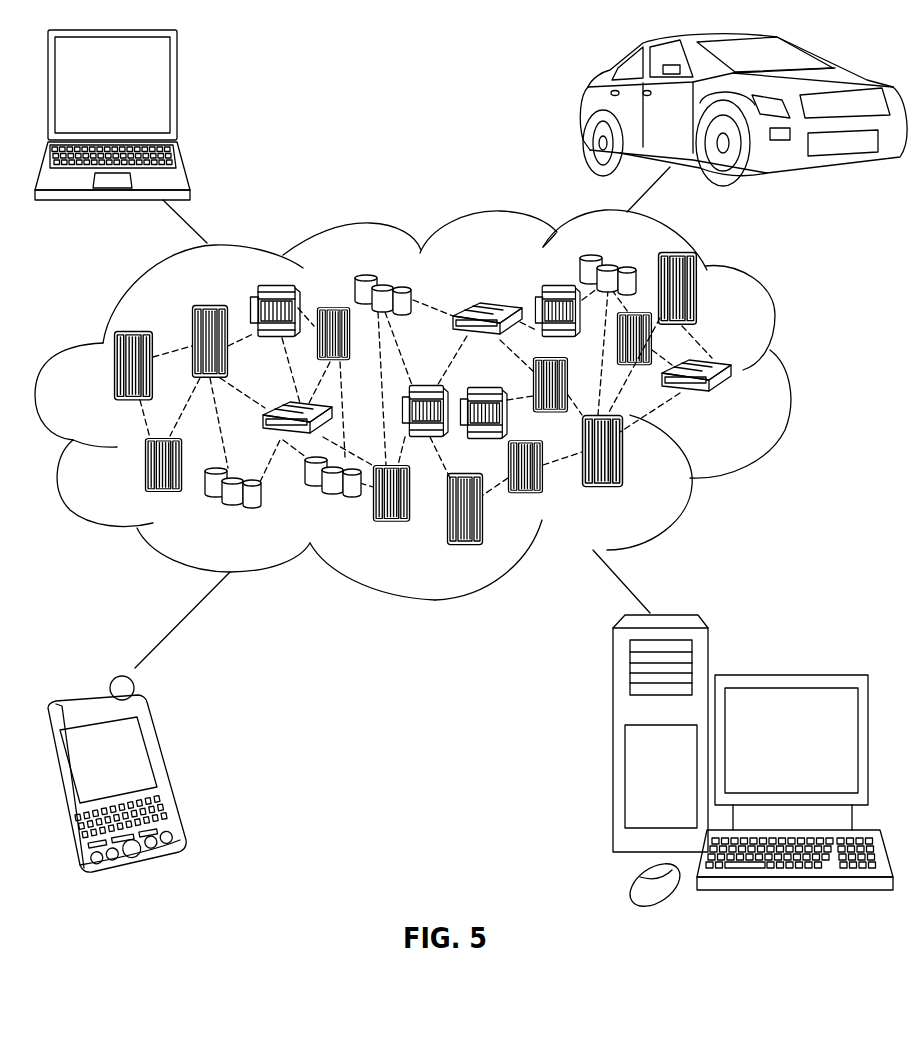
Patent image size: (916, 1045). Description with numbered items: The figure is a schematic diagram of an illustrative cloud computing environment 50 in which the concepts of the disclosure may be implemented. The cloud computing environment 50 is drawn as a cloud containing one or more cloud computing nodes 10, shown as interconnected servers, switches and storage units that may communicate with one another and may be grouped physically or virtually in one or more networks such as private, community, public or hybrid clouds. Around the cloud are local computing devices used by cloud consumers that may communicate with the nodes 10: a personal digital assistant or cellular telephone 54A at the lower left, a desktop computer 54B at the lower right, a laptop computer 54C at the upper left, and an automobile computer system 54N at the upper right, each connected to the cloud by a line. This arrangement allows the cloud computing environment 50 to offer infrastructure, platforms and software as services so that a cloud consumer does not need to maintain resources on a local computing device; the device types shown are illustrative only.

The cloud computing nodes 10 is at (735, 410).
The cloud computing environment 50 is at (792, 377).
The personal digital assistant (PDA) or cellular telephone 54A is at (167, 770).
The desktop computer 54B is at (788, 675).
The laptop computer 54C is at (177, 92).
The automobile computer system 54N is at (582, 108).